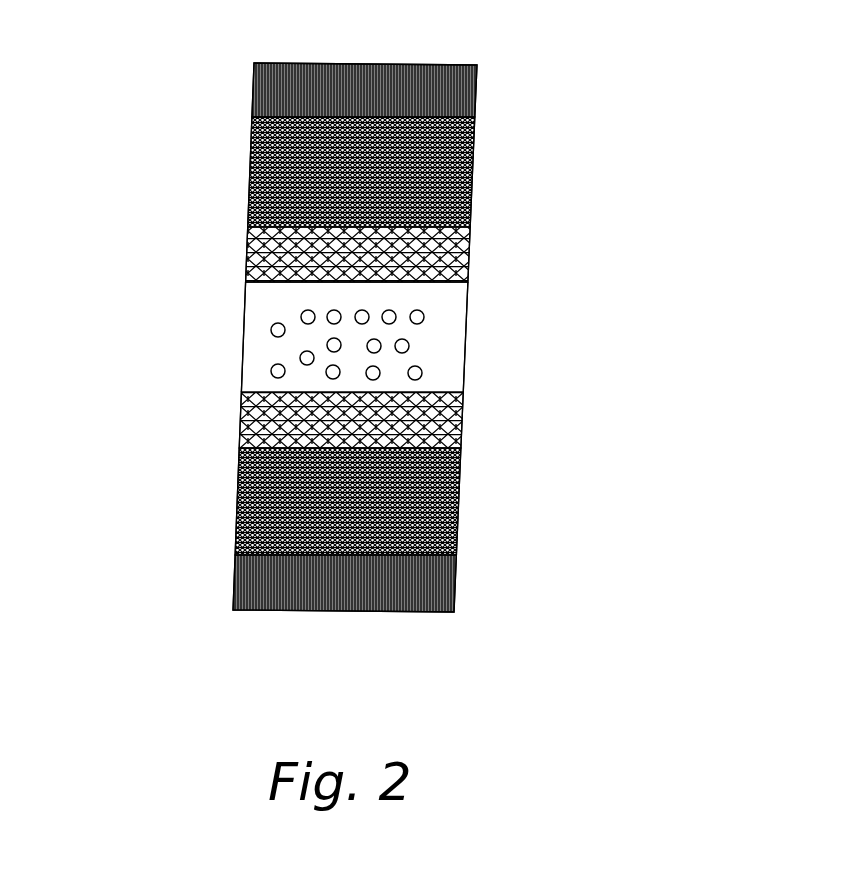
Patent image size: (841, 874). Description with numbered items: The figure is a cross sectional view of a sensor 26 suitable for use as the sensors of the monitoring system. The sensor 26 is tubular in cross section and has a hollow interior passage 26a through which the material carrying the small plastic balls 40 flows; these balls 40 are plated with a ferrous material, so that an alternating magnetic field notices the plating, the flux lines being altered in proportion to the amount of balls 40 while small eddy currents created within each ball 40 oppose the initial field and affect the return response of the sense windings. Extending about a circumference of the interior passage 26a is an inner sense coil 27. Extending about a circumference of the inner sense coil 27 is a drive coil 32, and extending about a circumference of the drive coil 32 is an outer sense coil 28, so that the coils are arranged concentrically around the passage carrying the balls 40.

The sensor 26 is at (603, 66).
The interior passage 26a is at (283, 285).
The inner sense coil 27 is at (475, 408).
The outer sense coil 28 is at (467, 585).
The drive coil 32 is at (223, 498).
The small plastic balls 40 is at (273, 365).